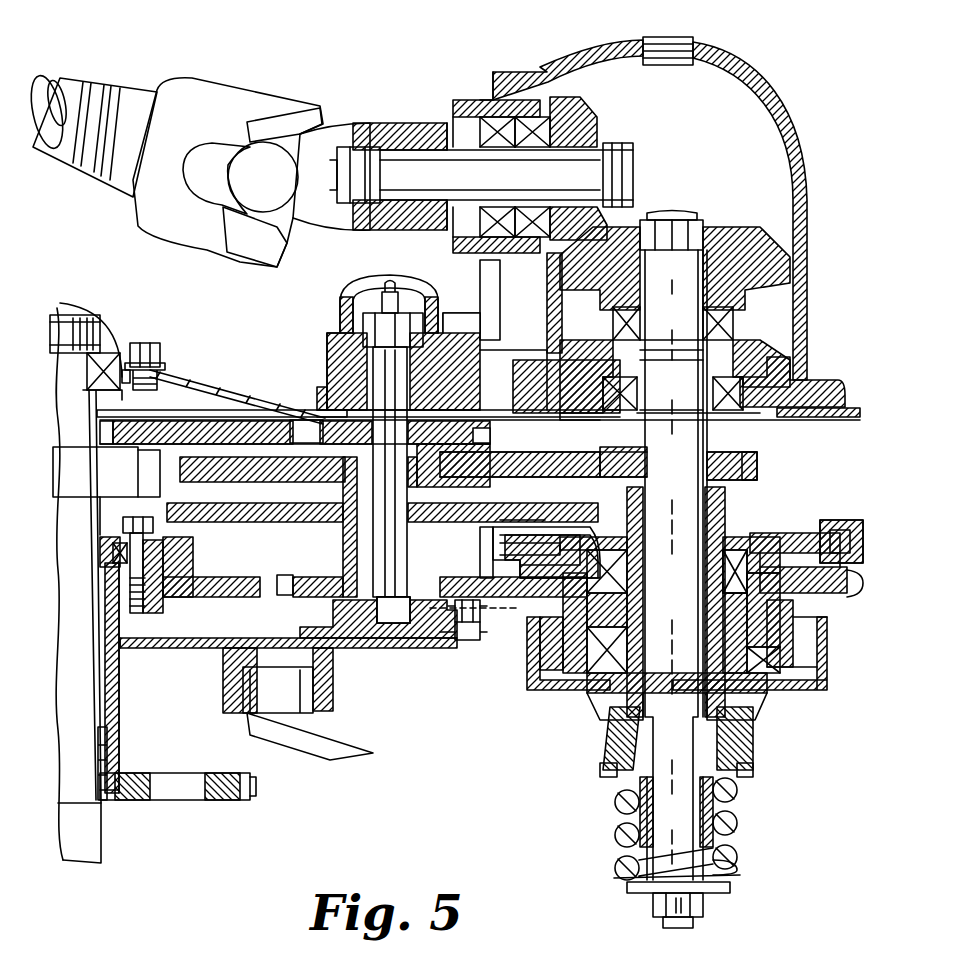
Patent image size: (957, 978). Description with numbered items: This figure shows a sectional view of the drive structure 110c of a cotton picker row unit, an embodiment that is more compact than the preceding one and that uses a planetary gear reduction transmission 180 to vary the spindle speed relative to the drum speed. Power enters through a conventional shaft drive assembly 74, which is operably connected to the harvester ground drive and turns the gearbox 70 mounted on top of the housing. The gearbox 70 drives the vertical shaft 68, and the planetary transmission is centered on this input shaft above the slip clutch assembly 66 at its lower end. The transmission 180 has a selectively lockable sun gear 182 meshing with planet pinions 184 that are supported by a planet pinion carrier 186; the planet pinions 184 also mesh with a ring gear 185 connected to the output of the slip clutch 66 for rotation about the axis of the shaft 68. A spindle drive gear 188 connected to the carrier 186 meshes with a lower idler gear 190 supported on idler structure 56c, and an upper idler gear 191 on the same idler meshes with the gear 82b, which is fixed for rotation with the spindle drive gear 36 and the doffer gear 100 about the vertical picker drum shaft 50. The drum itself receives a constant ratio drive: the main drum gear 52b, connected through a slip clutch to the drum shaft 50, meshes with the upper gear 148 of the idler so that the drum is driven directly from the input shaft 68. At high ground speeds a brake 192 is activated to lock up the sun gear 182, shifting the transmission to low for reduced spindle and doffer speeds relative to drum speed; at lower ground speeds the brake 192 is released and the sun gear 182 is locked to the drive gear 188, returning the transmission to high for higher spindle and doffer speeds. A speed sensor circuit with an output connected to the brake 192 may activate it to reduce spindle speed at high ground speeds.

The spindle drive gear 36 is at (220, 800).
The vertical picker drum shaft 50 is at (88, 842).
The main drum gear 52b is at (243, 430).
The idler structure 56c is at (298, 346).
The slip clutch assembly 66 is at (763, 852).
The vertical shaft 68 is at (718, 505).
The gearbox 70 is at (792, 60).
The shaft drive assembly 74 is at (282, 28).
The gear 82b is at (165, 510).
The large gear 100 is at (220, 598).
The drive structure 110c is at (868, 490).
The upper gear 148 is at (152, 448).
The planetary gear reduction transmission 180 is at (776, 704).
The sun gear 182 is at (525, 530).
The planet pinions 184 is at (535, 690).
The ring gear 185 is at (522, 640).
The planet pinion carrier 186 is at (568, 682).
The spindle drive gear 188 is at (468, 580).
The lower idler gear 190 is at (310, 598).
The upper idler gear 191 is at (260, 520).
The brake 192 is at (828, 525).